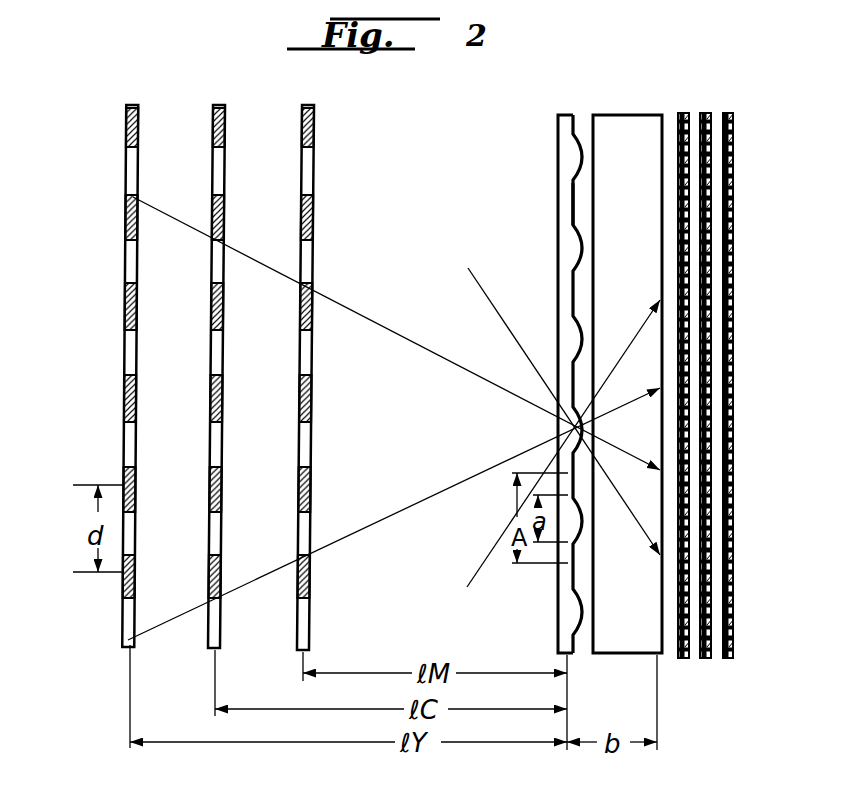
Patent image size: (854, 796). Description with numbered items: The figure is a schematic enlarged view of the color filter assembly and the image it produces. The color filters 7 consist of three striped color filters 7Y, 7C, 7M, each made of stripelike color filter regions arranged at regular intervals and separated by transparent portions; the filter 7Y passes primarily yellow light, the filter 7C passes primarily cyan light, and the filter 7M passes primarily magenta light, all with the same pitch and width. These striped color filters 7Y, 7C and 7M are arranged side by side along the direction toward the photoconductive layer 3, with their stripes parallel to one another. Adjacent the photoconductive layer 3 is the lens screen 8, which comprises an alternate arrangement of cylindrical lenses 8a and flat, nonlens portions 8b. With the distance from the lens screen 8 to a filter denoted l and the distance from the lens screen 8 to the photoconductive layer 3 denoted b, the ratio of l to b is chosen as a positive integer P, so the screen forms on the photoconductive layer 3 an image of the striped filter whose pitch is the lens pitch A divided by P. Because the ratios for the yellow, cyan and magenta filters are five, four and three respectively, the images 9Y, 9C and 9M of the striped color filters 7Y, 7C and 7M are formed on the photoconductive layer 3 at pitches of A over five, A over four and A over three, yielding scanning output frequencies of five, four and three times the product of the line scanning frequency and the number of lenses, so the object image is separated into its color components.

The color filters 7 is at (222, 67).
The striped color filter 7Y is at (140, 97).
The striped color filter 7C is at (226, 97).
The striped color filter 7M is at (314, 96).
The lens screen 8 is at (566, 115).
The cylindrical lenses 8a is at (578, 148).
The flat, nonlens portions 8b is at (573, 208).
The photoconductive layer 3 is at (662, 137).
The image of the yellow color filter 9Y is at (683, 113).
The image of the cyan color filter 9C is at (706, 113).
The image of the magenta color filter 9M is at (731, 113).